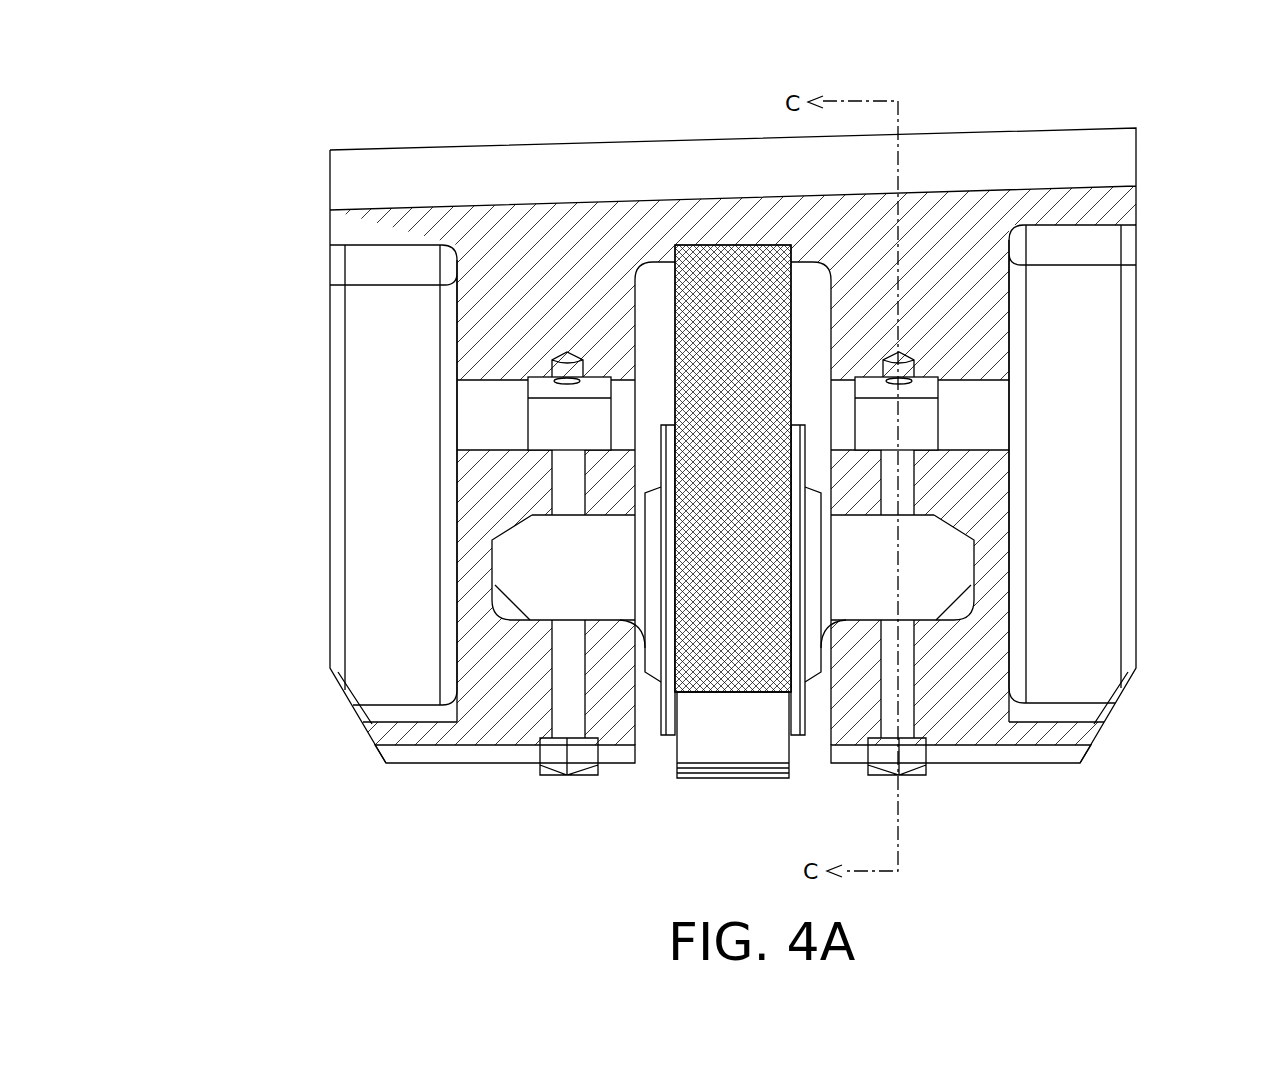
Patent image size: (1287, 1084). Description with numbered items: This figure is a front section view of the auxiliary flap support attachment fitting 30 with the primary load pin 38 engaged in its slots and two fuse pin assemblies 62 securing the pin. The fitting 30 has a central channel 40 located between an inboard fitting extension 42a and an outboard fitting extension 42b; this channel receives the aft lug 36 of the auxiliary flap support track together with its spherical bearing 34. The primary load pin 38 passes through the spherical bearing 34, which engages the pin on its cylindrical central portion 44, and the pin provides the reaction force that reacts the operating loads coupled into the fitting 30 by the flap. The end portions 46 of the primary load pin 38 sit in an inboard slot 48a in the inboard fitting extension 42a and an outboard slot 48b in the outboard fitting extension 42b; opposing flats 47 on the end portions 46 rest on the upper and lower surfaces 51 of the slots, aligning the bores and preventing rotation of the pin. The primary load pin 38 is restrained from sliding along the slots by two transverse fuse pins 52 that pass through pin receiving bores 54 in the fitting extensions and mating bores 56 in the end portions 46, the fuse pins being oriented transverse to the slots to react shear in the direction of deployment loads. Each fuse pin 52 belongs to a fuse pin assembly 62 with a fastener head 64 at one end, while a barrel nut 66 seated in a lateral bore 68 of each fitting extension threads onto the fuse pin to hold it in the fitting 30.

The auxiliary flap support attachment fitting 30 is at (1085, 750).
The spherical bearing 34 is at (812, 662).
The aft lug 36 is at (735, 735).
The primary load pin 38 is at (497, 560).
The central channel 40 is at (653, 302).
The inboard fitting extension 42a is at (563, 632).
The outboard fitting extension 42b is at (983, 647).
The cylindrical central portion 44 is at (828, 580).
The end portions 46 is at (476, 485).
The opposing flats 47 is at (568, 625).
The inboard slot 48a is at (522, 630).
The outboard slot 48b is at (935, 630).
The upper and lower surfaces 51 is at (568, 627).
The transverse fuse pins 52 is at (572, 483).
The pin receiving bores 54 is at (552, 497).
The mating bores 56 is at (498, 702).
The fuse pin assemblies 62 is at (552, 560).
The fastener heads 64 is at (560, 772).
The barrel nuts 66 is at (552, 413).
The lateral bores 68 is at (482, 410).